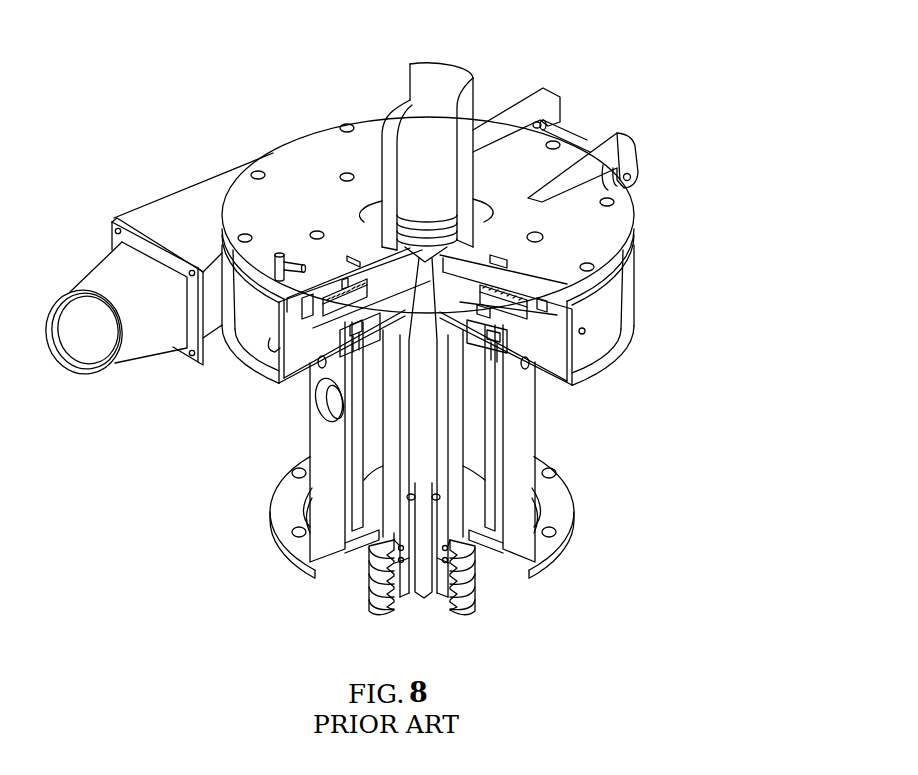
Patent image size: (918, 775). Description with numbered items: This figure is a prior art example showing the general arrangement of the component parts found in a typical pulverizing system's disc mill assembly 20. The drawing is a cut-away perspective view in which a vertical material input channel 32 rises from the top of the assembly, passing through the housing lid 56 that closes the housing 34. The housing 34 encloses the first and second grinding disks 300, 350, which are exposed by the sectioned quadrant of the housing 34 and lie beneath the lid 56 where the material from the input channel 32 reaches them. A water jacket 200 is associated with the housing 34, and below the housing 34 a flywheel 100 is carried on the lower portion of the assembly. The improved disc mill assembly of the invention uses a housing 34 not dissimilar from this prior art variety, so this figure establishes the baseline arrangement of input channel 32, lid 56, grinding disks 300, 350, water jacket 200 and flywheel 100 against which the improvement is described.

The disc mill assembly 20 is at (165, 108).
The material input channel 32 is at (410, 105).
The housing lid 56 is at (321, 143).
The housing 34 is at (588, 355).
The first grinding disk 300 is at (367, 295).
The second grinding disk 350 is at (345, 297).
The water jacket 200 is at (584, 332).
The flywheel 100 is at (383, 305).